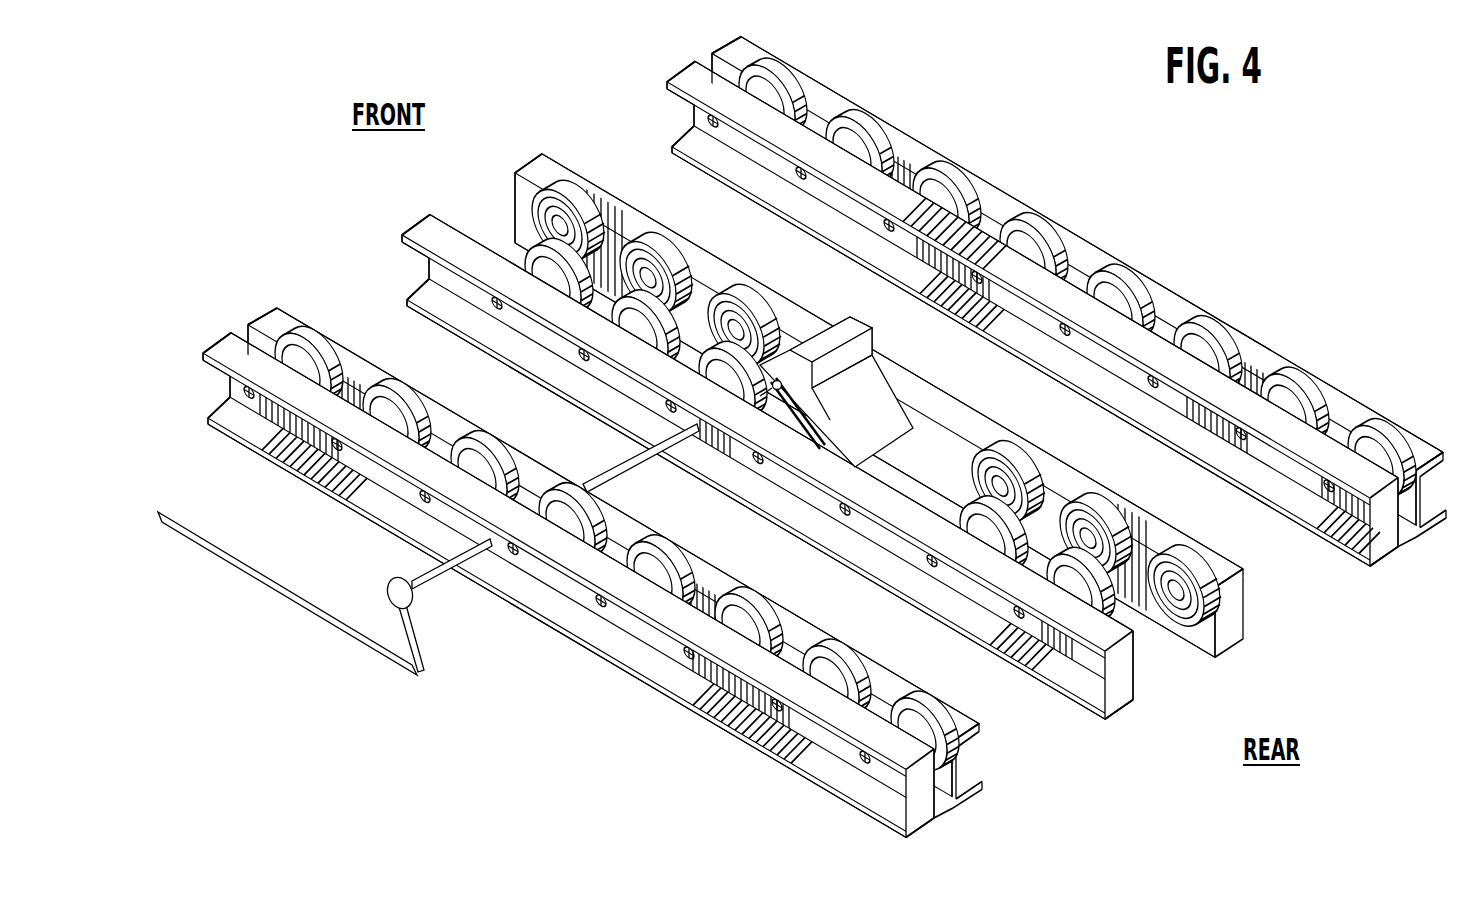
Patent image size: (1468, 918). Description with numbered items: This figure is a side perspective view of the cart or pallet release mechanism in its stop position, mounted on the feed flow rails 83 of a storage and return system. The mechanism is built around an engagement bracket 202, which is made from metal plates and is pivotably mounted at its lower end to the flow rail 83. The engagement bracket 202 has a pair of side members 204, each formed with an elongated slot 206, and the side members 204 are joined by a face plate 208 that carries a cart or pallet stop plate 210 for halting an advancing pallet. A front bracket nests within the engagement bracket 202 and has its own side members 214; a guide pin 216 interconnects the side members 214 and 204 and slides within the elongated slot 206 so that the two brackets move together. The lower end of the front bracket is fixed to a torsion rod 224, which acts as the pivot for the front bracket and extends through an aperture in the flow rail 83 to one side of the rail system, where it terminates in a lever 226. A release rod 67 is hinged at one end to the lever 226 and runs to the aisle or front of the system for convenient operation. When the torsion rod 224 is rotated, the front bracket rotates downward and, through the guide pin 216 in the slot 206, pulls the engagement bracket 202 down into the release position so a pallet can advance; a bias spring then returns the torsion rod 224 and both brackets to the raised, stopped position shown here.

The release rod 67 is at (358, 648).
The feed flow rail 83 is at (1167, 534).
The engagement bracket 202 is at (950, 345).
The side member 204 is at (781, 385).
The elongated slot 206 is at (920, 398).
The face plate 208 is at (890, 384).
The stop plate 210 is at (887, 300).
The side member 214 is at (783, 398).
The guide pin 216 is at (768, 394).
The torsion rod 224 is at (624, 478).
The lever 226 is at (420, 633).